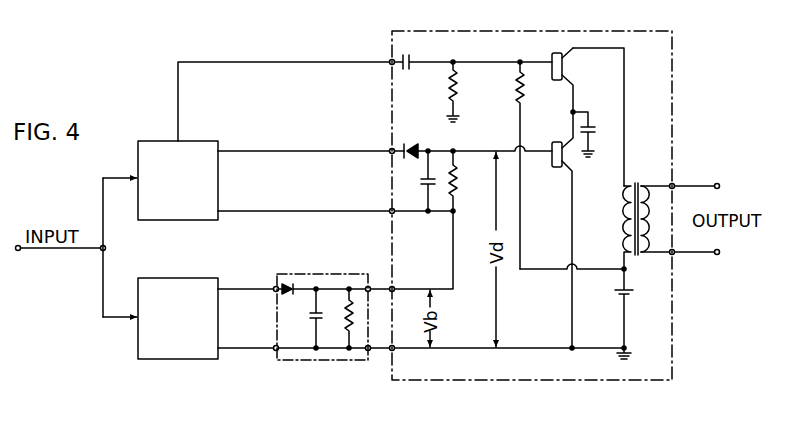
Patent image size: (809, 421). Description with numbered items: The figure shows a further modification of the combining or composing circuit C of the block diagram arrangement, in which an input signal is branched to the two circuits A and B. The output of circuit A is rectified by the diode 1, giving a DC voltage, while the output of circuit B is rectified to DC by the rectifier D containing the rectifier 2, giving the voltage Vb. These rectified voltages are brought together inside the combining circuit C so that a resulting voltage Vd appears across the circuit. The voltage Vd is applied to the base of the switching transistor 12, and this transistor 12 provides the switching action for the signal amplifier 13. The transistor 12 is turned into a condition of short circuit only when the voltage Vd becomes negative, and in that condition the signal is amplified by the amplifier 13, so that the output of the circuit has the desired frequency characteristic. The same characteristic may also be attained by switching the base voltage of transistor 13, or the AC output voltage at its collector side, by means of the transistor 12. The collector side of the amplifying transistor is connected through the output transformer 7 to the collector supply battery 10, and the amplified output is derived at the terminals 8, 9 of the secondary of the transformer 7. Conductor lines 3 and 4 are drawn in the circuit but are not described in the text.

The diode 1 is at (413, 143).
The rectifier 2 is at (286, 284).
The conductor line 3 is at (490, 140).
The conductor line 4 is at (510, 360).
The output transformer 7 is at (640, 185).
The terminal 8 is at (718, 183).
The terminal 9 is at (720, 253).
The collector supply battery 10 is at (634, 292).
The switching transistor 12 is at (556, 142).
The signal amplifier 13 is at (552, 56).
The circuit A is at (187, 190).
The circuit B is at (187, 334).
The combining circuit C is at (638, 382).
The rectifier D is at (313, 361).